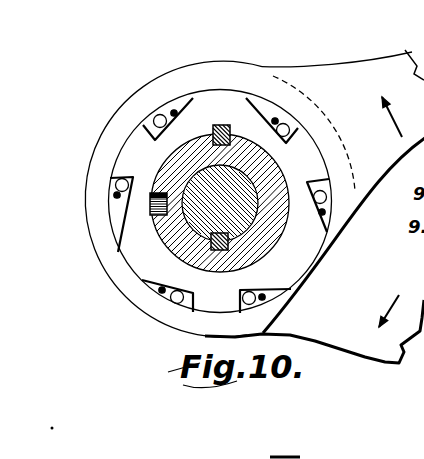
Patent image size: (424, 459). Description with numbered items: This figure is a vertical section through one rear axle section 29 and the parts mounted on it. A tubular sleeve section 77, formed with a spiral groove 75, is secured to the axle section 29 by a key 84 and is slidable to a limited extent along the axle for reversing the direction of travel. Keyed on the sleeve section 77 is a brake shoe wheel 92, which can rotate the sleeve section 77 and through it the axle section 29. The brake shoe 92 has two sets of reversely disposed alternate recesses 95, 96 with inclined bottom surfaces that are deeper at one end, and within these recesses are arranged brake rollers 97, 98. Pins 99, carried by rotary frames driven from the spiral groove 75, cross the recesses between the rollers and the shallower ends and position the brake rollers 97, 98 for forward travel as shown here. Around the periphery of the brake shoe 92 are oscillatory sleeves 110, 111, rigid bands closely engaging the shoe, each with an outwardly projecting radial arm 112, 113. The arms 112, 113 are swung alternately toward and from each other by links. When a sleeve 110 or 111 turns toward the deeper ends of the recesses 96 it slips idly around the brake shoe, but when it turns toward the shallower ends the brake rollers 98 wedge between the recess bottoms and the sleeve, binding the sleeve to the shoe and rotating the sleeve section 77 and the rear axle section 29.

The axle section 29 is at (157, 243).
The spiral groove 75 is at (152, 212).
The tubular sleeve section 77 is at (259, 166).
The key 84 is at (219, 258).
The brake shoe wheel 92 is at (268, 252).
The recess 95 is at (274, 103).
The recess 96 is at (147, 113).
The brake roller 97 is at (288, 128).
The brake roller 98 is at (157, 116).
The pin 99 is at (175, 110).
The oscillatory sleeve 110 is at (224, 57).
The oscillatory sleeve 111 is at (350, 166).
The radial arm 112 is at (403, 87).
The radial arm 113 is at (314, 250).